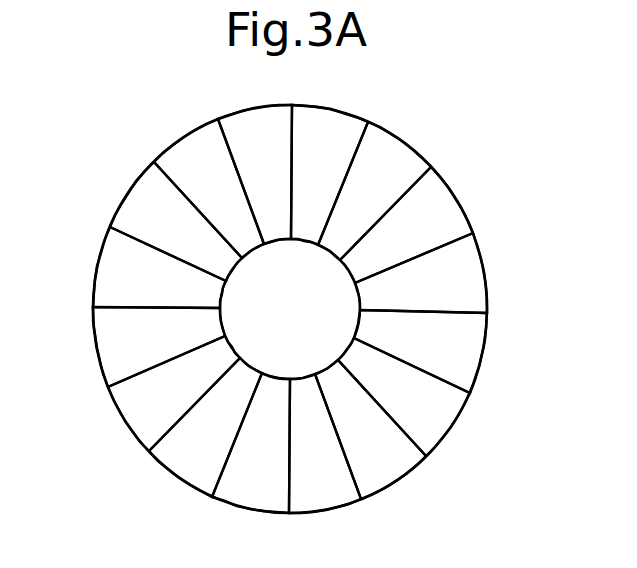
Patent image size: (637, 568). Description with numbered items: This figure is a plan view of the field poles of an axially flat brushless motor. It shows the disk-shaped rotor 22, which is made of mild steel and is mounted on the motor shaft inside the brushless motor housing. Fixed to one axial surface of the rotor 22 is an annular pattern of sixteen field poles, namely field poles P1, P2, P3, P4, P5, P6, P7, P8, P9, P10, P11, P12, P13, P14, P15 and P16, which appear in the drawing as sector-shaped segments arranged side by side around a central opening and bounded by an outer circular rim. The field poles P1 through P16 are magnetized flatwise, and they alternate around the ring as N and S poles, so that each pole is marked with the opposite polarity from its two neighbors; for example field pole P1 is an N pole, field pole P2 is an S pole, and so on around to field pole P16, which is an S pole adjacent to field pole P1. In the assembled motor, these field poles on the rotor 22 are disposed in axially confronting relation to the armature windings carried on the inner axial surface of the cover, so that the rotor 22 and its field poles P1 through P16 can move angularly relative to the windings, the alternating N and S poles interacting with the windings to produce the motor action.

The rotor 22 is at (486, 254).
The field pole P1 is at (333, 120).
The field pole P2 is at (393, 148).
The field pole P3 is at (442, 205).
The field pole P4 is at (468, 290).
The field pole P5 is at (462, 342).
The field pole P6 is at (428, 408).
The field pole P7 is at (398, 463).
The field pole P8 is at (335, 490).
The field pole P9 is at (255, 478).
The field pole P10 is at (193, 458).
The field pole P11 is at (147, 412).
The field pole P12 is at (123, 345).
The field pole P13 is at (123, 272).
The field pole P14 is at (152, 208).
The field pole P15 is at (187, 152).
The field pole P16 is at (258, 133).